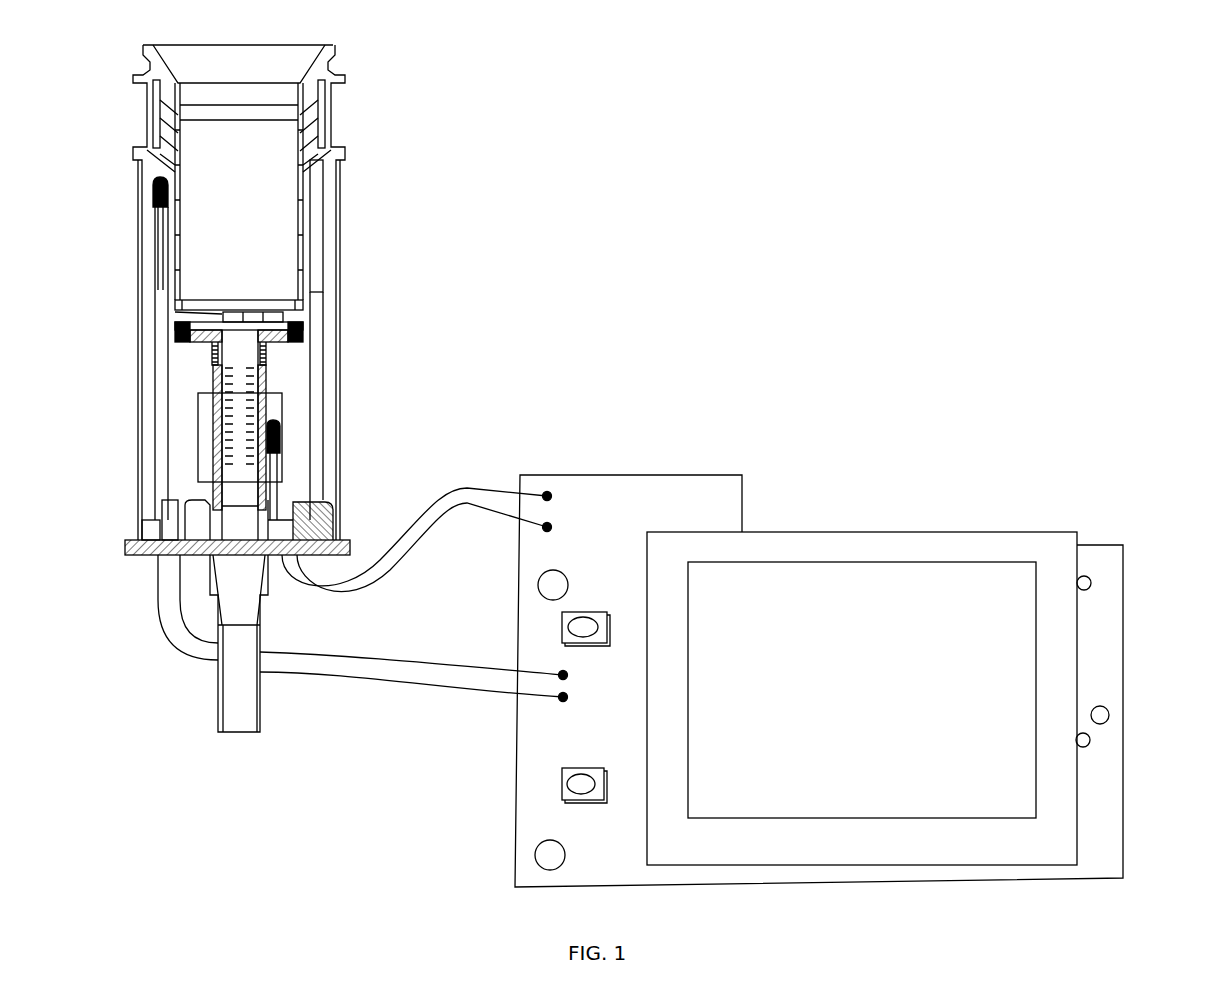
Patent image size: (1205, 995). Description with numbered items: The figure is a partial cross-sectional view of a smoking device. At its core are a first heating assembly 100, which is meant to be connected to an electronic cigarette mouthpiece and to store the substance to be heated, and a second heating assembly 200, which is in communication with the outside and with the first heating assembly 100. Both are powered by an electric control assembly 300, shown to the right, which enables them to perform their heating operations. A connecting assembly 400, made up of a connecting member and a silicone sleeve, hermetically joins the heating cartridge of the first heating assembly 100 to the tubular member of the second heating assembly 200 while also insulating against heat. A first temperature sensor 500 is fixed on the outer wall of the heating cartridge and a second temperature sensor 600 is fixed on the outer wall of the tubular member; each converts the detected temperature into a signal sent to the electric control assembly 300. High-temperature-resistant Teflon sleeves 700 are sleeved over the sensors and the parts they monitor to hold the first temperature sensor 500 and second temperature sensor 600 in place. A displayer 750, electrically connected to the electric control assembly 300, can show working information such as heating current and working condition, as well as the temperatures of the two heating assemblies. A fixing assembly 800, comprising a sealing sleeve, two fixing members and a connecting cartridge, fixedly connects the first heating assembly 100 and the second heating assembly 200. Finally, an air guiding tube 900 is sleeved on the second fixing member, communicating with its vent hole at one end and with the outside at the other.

The first heating assembly 100 is at (305, 228).
The second heating assembly 200 is at (262, 375).
The electric control assembly 300 is at (650, 490).
The connecting assembly 400 is at (305, 333).
The first temperature sensor 500 is at (153, 186).
The second temperature sensor 600 is at (280, 437).
The Teflon sleeve 700 is at (153, 268).
The displayer 750 is at (942, 572).
The fixing assembly 800 is at (138, 358).
The air guiding tube 900 is at (218, 695).